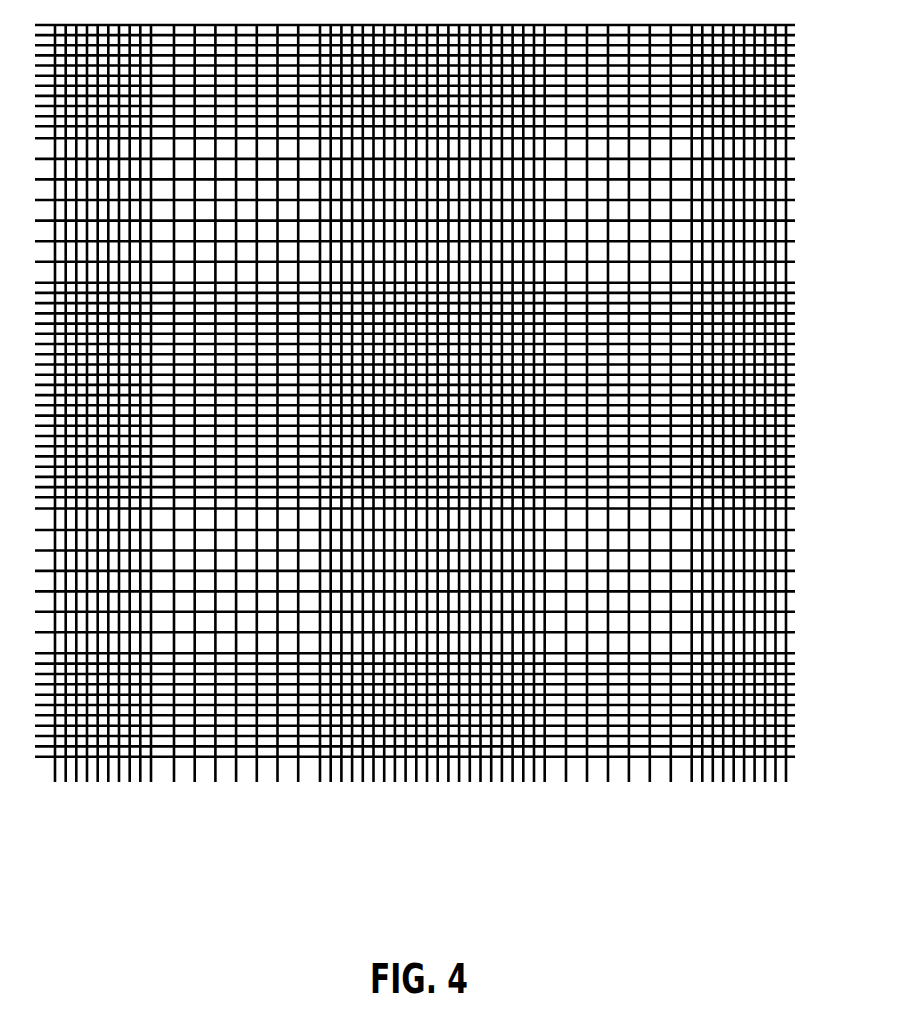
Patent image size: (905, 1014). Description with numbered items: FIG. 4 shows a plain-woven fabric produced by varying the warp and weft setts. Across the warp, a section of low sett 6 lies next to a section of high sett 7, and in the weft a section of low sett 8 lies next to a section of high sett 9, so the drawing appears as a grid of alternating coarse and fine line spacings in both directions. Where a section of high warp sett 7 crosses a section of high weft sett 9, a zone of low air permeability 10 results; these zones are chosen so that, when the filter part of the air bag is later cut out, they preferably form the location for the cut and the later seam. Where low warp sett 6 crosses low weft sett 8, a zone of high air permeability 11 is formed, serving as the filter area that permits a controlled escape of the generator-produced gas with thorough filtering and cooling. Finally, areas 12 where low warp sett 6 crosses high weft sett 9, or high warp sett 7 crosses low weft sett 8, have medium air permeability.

The section of low warp sett 6 is at (433, 424).
The section of high warp sett 7 is at (420, 424).
The section of low weft sett 8 is at (442, 385).
The section of high weft sett 9 is at (443, 391).
The zone of low air permeability 10 is at (430, 704).
The zone of high air permeability 11 is at (622, 583).
The zone of medium air permeability 12 is at (636, 713).